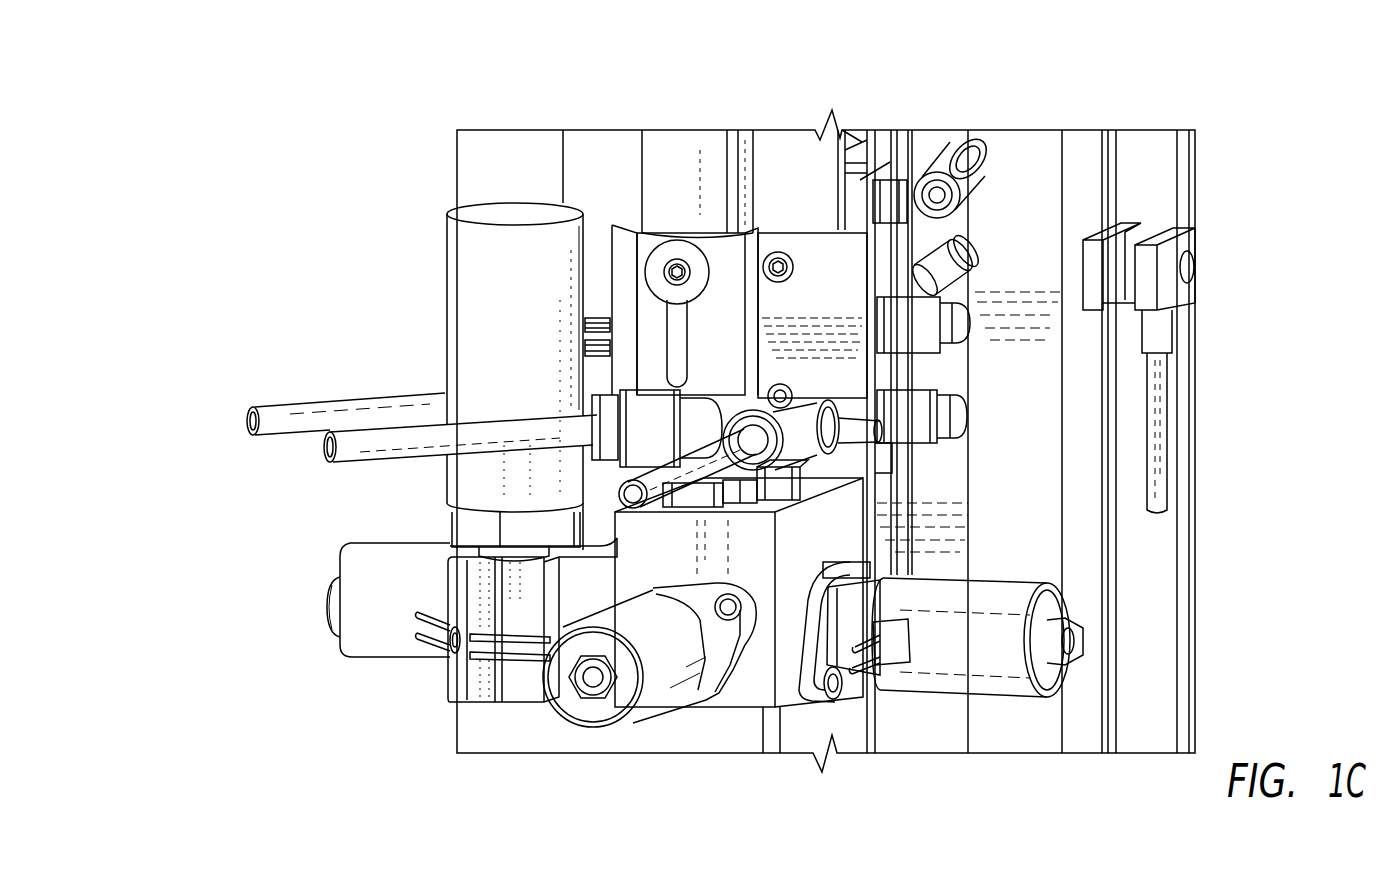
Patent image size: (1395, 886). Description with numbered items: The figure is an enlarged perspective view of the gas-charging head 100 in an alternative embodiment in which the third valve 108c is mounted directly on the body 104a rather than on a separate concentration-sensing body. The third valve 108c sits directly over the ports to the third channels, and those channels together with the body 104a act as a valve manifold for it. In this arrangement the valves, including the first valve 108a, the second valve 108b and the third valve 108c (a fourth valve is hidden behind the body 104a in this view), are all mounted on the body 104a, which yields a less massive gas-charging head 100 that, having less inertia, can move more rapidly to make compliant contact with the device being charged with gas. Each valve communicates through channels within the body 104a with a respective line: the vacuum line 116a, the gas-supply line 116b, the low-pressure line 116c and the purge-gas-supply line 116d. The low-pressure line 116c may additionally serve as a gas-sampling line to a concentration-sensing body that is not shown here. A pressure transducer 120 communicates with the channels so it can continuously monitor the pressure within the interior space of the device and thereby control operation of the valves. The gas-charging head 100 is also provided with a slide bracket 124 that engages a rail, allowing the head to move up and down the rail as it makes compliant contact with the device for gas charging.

The gas-charging head 100 is at (1024, 68).
The body 104a is at (739, 690).
The first valve 108a is at (410, 667).
The second valve 108b is at (1007, 709).
The third valve 108c is at (639, 725).
The vacuum line 116a is at (293, 395).
The gas-supply line 116b is at (650, 478).
The low-pressure line 116c is at (370, 470).
The purge-gas-supply line 116d is at (853, 406).
The pressure transducer 120 is at (440, 289).
The slide bracket 124 is at (847, 135).